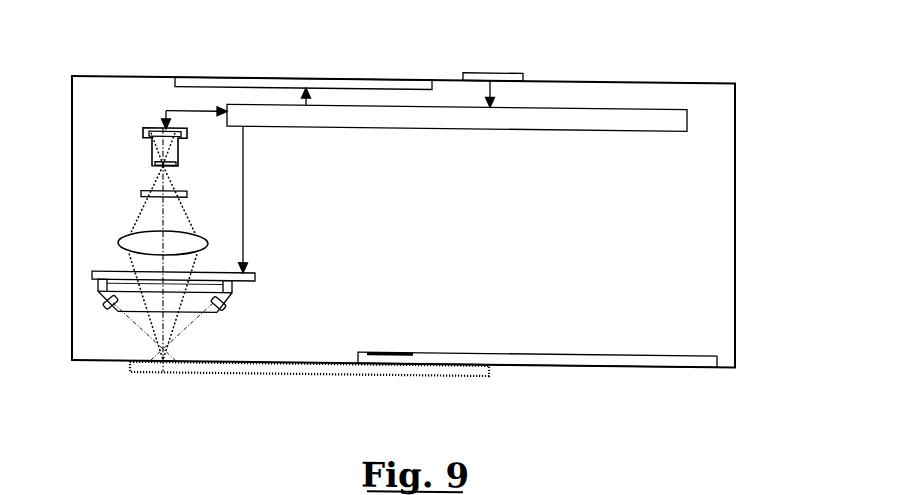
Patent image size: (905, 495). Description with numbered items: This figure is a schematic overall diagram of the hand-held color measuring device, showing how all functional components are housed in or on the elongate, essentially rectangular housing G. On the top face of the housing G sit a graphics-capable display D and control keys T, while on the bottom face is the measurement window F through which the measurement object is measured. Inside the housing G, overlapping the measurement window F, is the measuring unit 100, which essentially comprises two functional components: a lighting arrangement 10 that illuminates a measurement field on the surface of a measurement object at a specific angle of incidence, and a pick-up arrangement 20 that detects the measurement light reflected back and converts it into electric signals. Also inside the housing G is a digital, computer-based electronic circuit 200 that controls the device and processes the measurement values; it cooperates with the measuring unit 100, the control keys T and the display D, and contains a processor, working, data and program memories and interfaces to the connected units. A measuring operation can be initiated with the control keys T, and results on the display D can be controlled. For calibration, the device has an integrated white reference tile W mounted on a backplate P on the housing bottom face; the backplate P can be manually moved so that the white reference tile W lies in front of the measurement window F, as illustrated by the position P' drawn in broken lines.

The housing G is at (727, 240).
The display D is at (237, 80).
The control keys T is at (483, 68).
The electronic circuit 200 is at (532, 122).
The measuring unit 100 is at (207, 240).
The pick-up arrangement 20 is at (110, 132).
The lighting arrangement 10 is at (265, 274).
The measurement window F is at (141, 262).
The backplate P is at (537, 337).
The white reference tile W is at (387, 348).
The position of the backplate P' is at (309, 397).